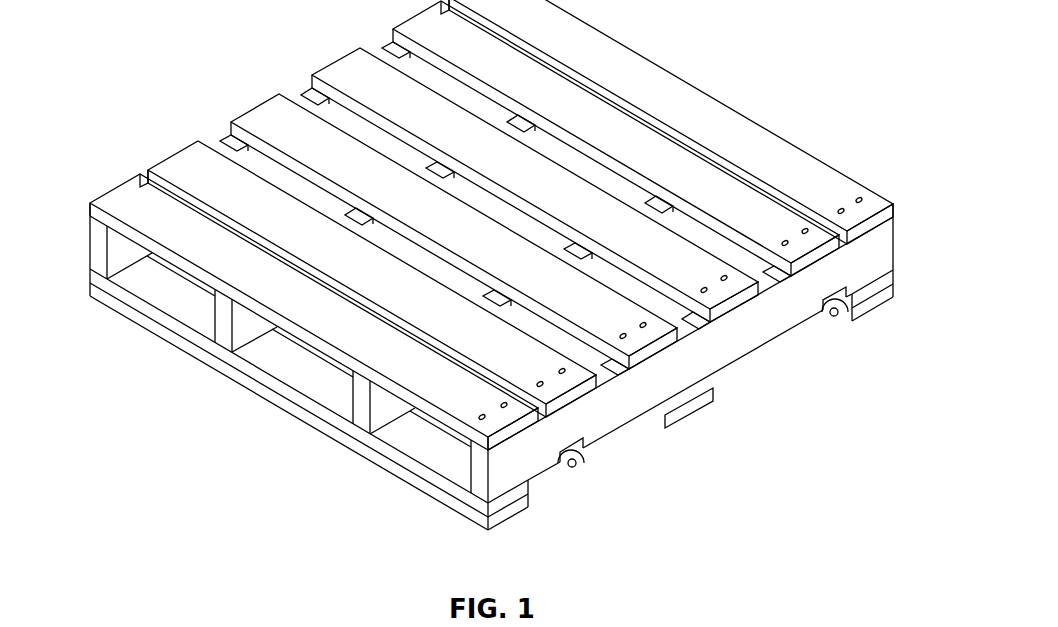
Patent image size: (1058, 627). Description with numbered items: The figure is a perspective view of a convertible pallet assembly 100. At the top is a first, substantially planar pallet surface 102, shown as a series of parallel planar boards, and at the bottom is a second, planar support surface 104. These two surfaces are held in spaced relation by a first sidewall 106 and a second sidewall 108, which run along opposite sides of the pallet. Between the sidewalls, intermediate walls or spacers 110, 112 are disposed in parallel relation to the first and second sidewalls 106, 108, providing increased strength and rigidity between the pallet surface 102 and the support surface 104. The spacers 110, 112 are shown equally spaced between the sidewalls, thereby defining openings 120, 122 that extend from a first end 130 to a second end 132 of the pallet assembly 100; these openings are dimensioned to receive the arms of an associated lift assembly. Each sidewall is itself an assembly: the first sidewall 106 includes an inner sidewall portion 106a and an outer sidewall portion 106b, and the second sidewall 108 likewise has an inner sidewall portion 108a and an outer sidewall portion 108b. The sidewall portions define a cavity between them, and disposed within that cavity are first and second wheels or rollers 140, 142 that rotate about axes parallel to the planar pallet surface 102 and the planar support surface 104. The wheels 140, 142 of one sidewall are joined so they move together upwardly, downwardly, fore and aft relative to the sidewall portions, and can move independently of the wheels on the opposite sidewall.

The convertible pallet assembly 100 is at (499, 275).
The pallet surface 102 is at (814, 178).
The support surface 104 is at (317, 440).
The first sidewall 106 is at (908, 256).
The inner sidewall portion 106a is at (474, 492).
The outer sidewall portion 106b is at (641, 447).
The second sidewall 108 is at (86, 232).
The inner sidewall portion 108a is at (108, 290).
The outer sidewall portion 108b is at (222, 143).
The intermediate wall/spacer 110 is at (361, 425).
The intermediate wall/spacer 112 is at (222, 345).
The opening 120 is at (440, 466).
The opening 122 is at (213, 345).
The first end 130 is at (702, 82).
The second end 132 is at (300, 402).
The first wheel 140 is at (569, 483).
The second wheel 142 is at (834, 335).